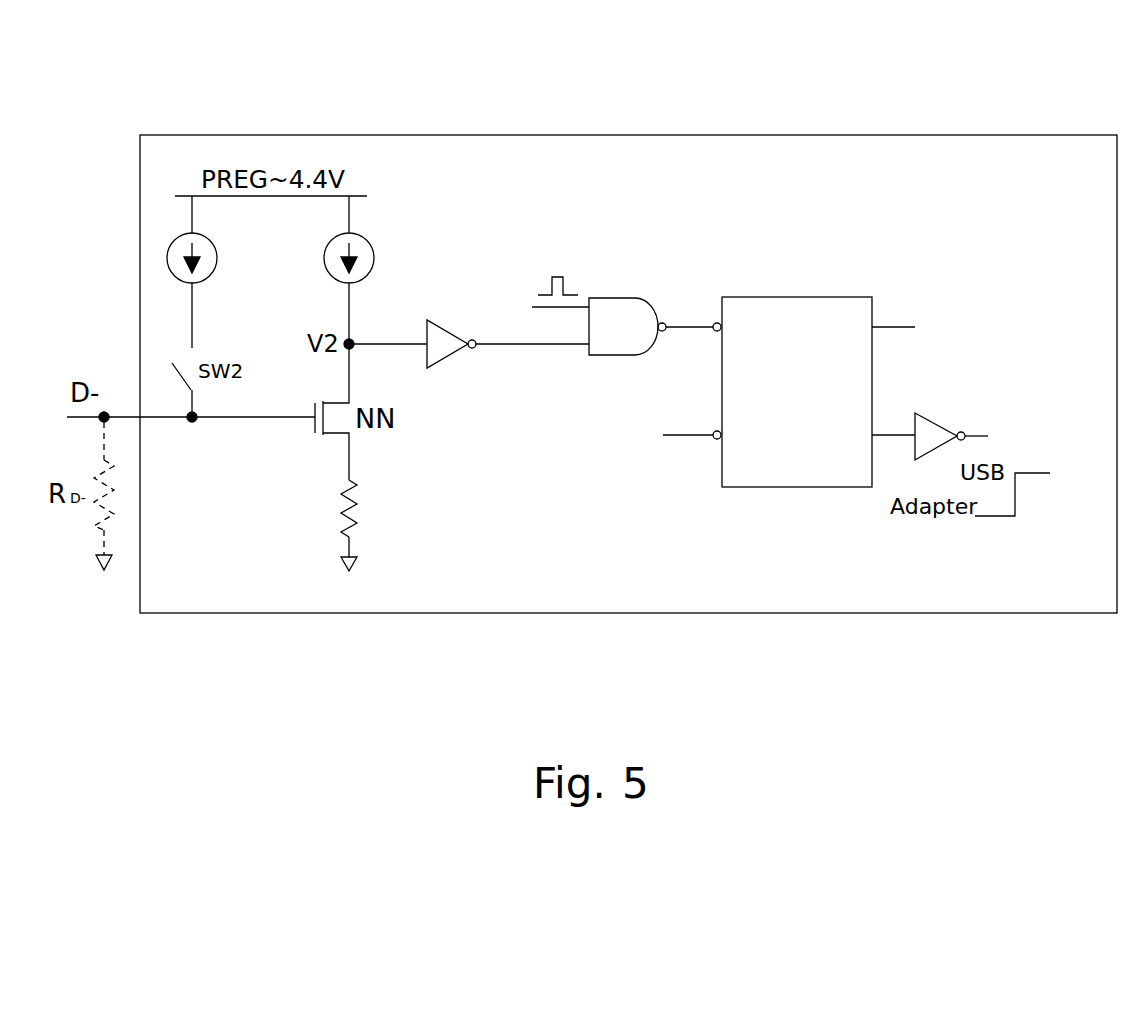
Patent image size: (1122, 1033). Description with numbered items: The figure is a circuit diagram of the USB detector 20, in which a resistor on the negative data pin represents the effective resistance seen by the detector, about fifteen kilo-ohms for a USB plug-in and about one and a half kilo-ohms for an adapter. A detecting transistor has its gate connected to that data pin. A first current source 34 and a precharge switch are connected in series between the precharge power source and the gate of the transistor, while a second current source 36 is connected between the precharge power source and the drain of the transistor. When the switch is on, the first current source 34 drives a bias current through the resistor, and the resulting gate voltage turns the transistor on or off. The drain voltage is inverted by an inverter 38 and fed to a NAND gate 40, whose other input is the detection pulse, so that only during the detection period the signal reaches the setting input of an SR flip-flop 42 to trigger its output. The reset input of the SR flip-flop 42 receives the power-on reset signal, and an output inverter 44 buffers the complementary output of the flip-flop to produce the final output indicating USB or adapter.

The USB detector 20 is at (630, 135).
The first current source 34 is at (217, 258).
The second current source 36 is at (375, 258).
The inverter 38 is at (452, 352).
The NAND gate 40 is at (622, 298).
The SR flip-flop 42 is at (797, 297).
The output inverter 44 is at (935, 426).